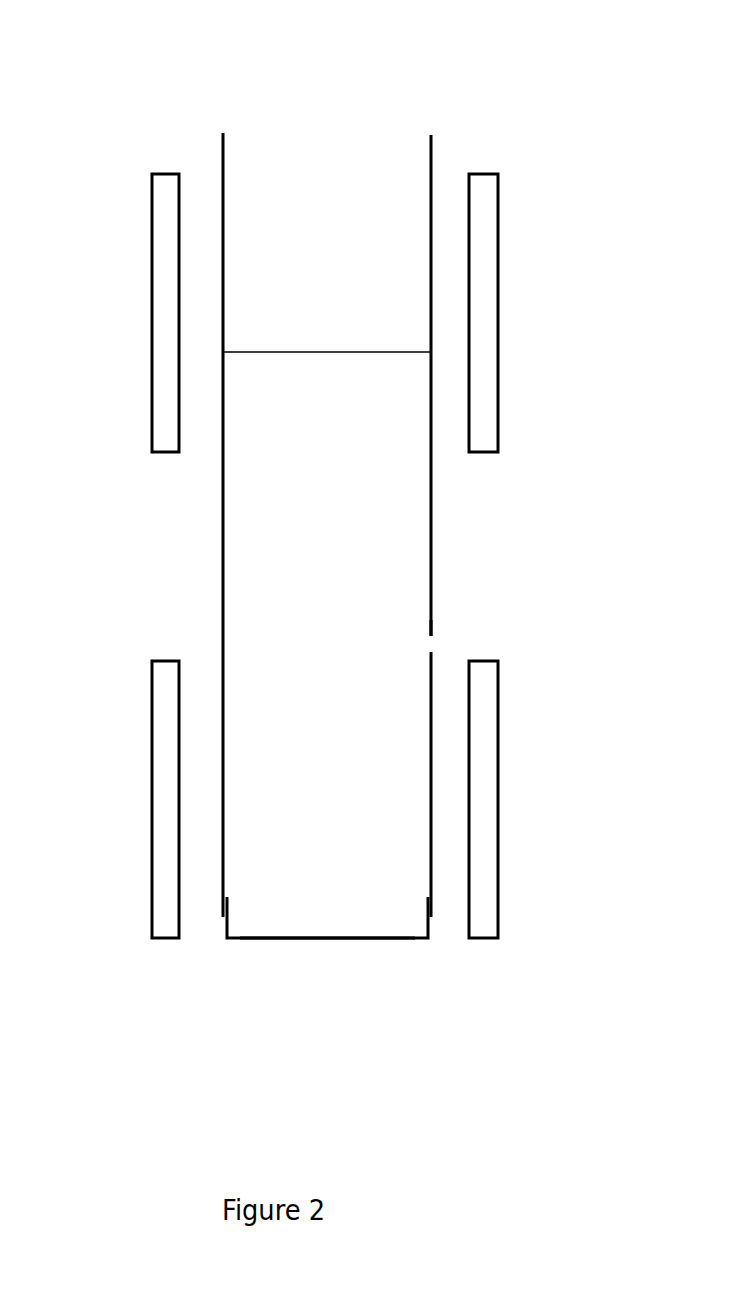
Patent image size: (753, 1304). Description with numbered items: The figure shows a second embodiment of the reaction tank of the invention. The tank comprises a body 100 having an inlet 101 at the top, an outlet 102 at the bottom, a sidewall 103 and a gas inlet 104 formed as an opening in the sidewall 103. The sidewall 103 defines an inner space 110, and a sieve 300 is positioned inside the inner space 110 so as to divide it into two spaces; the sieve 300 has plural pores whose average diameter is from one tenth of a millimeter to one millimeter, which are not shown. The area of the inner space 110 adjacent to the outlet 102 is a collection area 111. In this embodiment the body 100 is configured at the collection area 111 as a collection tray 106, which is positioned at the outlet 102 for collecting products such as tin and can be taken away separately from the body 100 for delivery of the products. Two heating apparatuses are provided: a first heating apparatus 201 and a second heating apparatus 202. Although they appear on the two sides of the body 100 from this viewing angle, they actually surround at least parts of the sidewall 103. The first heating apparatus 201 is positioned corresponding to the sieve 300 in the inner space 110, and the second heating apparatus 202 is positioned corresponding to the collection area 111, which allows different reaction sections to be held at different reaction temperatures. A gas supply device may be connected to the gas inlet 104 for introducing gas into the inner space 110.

The body 100 is at (307, 545).
The inlet 101 is at (358, 163).
The outlet 102 is at (333, 917).
The sidewall 103 is at (222, 530).
The gas inlet 104 is at (428, 643).
The collection tray 106 is at (298, 940).
The inner space 110 is at (245, 590).
The collection area 111 is at (297, 898).
The first heating apparatus 201 is at (161, 300).
The second heating apparatus 202 is at (167, 889).
The sieve 300 is at (369, 352).